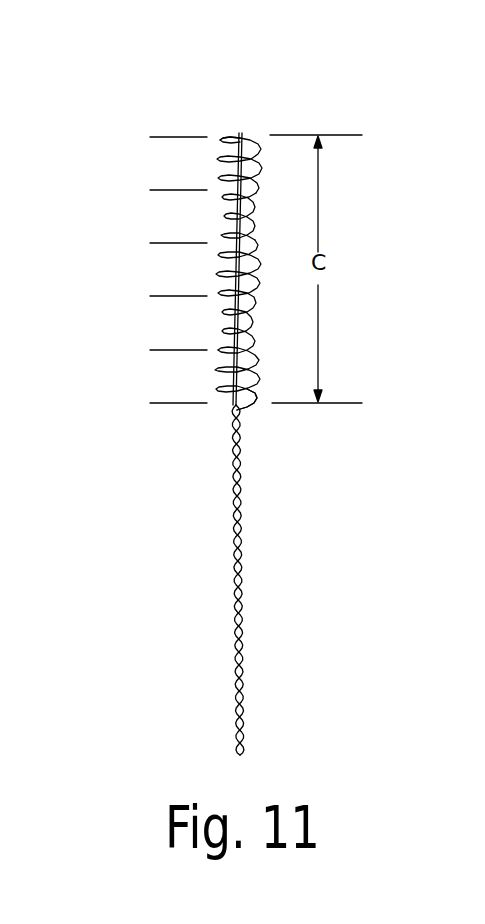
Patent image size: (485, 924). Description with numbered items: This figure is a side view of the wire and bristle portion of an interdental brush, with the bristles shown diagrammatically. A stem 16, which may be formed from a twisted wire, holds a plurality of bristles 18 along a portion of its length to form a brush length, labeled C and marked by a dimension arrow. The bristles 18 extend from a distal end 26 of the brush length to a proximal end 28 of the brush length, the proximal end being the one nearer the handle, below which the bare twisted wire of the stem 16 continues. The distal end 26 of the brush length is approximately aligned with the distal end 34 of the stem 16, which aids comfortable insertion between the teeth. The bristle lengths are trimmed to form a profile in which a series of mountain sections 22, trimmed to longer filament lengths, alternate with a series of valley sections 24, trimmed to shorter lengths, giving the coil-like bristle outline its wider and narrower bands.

The stem 16 is at (235, 515).
The bristles 18 is at (199, 245).
The mountain sections 22 is at (157, 273).
The valley sections 24 is at (170, 273).
The distal end of the brush length 26 is at (229, 142).
The proximal end of the brush length 28 is at (252, 400).
The distal end of the stem 34 is at (238, 135).